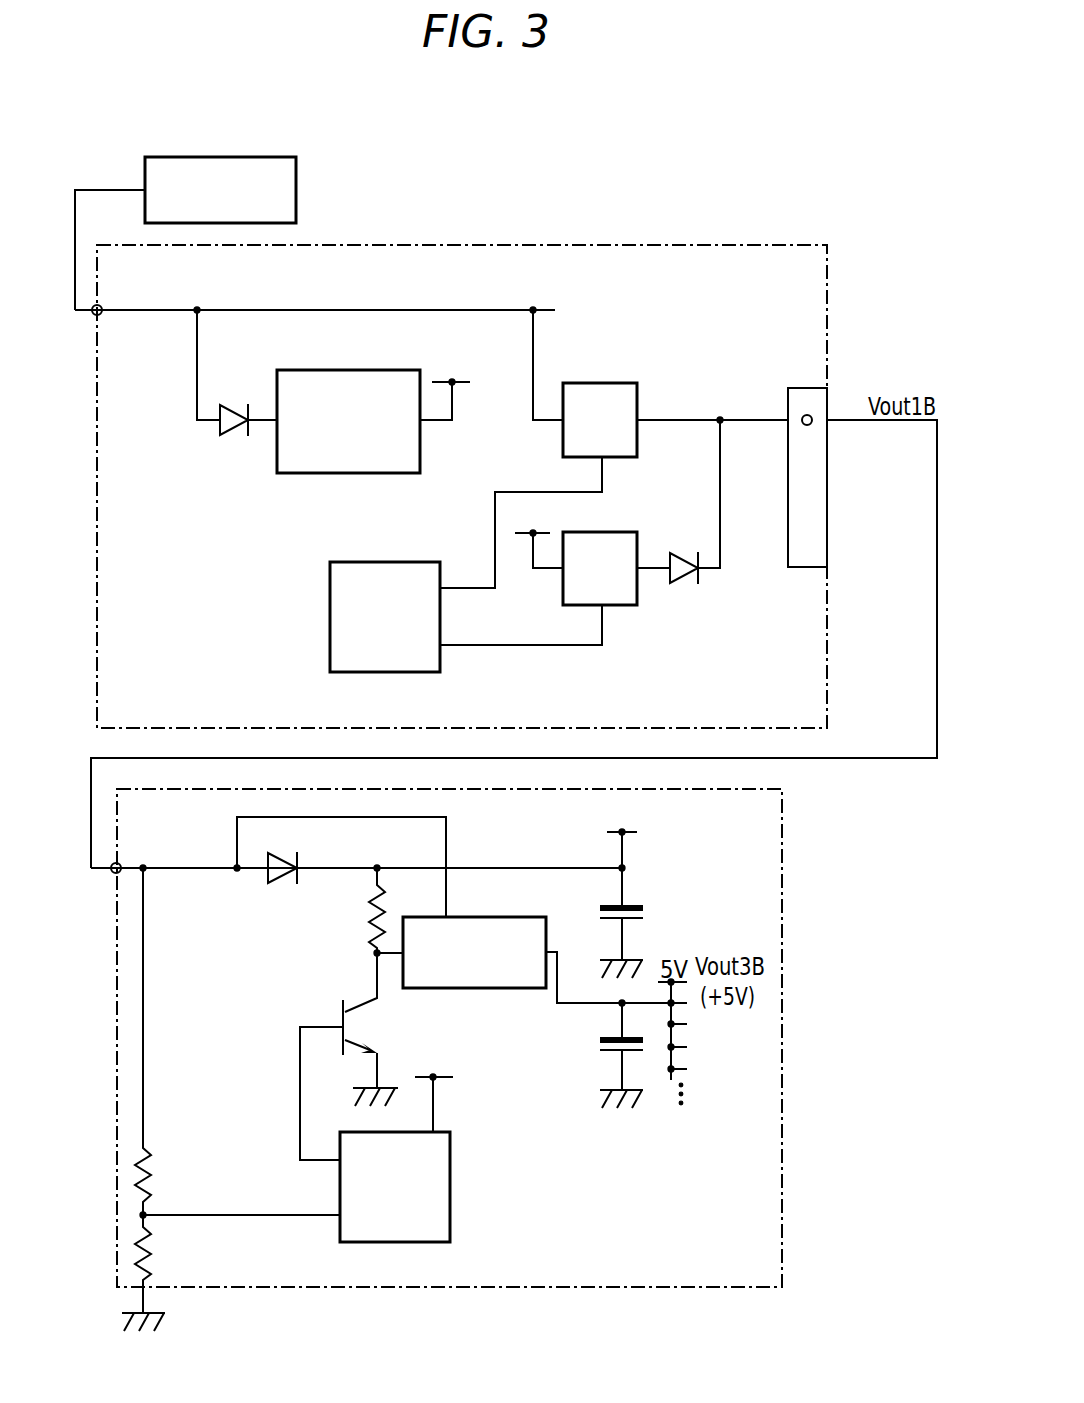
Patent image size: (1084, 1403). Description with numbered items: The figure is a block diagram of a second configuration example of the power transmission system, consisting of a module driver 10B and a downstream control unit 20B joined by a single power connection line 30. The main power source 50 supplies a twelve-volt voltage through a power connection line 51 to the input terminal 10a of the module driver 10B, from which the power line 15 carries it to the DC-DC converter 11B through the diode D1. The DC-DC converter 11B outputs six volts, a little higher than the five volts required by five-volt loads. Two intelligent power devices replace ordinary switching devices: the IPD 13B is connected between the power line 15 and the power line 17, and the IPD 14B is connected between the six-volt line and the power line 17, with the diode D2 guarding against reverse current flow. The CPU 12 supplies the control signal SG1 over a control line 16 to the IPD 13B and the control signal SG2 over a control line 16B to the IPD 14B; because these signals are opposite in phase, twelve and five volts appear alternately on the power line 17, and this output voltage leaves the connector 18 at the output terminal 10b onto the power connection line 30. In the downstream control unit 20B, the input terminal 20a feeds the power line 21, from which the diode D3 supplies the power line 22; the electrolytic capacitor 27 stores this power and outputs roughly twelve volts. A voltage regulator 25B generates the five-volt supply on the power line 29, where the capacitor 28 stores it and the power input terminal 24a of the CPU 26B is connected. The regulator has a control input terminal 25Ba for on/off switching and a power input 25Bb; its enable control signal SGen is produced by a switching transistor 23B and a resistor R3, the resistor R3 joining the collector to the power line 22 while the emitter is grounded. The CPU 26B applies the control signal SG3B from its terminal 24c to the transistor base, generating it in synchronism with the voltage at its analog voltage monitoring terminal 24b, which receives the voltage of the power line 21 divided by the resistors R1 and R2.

The main power source 50 is at (205, 157).
The power connection line 51 is at (120, 190).
The module driver 10B is at (565, 241).
The input terminal 10a is at (95, 317).
The output terminal 10b is at (812, 416).
The power line 15 is at (388, 308).
The DC-DC converter 11B is at (277, 383).
The IPD 13B is at (615, 383).
The IPD 14B is at (612, 532).
The CPU 12 is at (388, 560).
The control line 16 is at (535, 490).
The control line 16B is at (565, 648).
The power line 17 is at (690, 418).
The connector 18 is at (808, 388).
The power connection line 30 is at (937, 588).
The downstream control unit 20B is at (596, 1290).
The input terminal 20a is at (112, 875).
The power line 21 is at (188, 867).
The power line 22 is at (552, 866).
The switching transistor 23B is at (340, 1000).
The power input terminal 24a is at (437, 1128).
The analog voltage monitoring terminal 24b is at (338, 1217).
The CPU signal output terminal 24c is at (338, 1162).
The voltage regulator 25B is at (475, 990).
The control input terminal 25Ba is at (395, 950).
The regulator power input 25Bb is at (450, 915).
The CPU 26B is at (453, 1186).
The capacitor 27 is at (605, 922).
The capacitor 28 is at (607, 1053).
The power line 29 is at (575, 1005).
The diode D1 is at (232, 428).
The diode D2 is at (685, 583).
The diode D3 is at (285, 885).
The resistor R1 is at (150, 1166).
The resistor R2 is at (150, 1259).
The resistor R3 is at (372, 893).
The control signal SG1 is at (463, 586).
The control signal SG2 is at (463, 648).
The control signal SG3B is at (298, 1072).
The enable control signal SGen is at (392, 957).